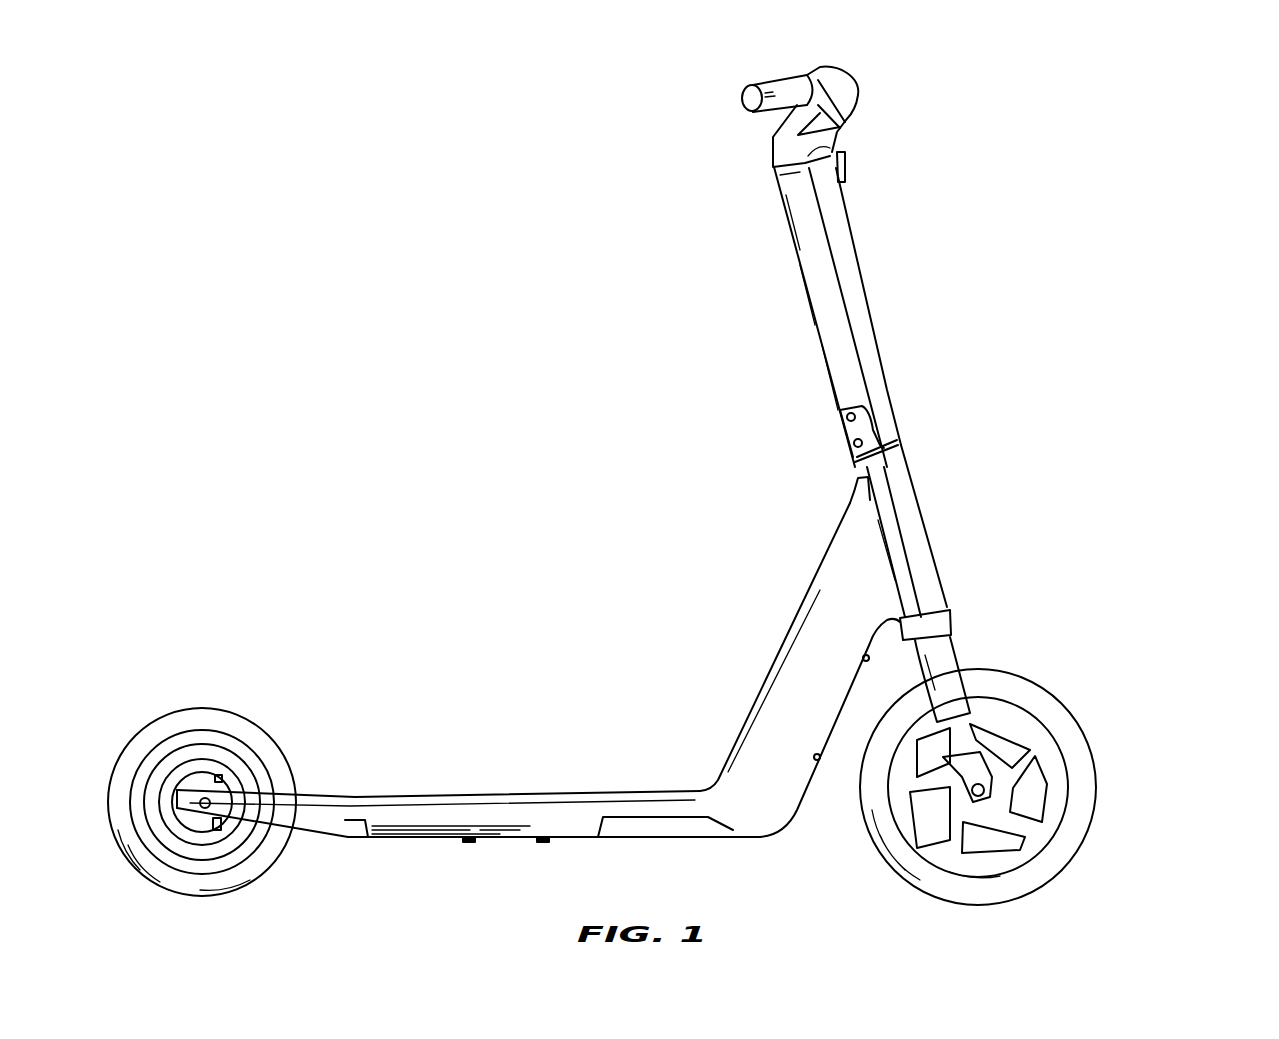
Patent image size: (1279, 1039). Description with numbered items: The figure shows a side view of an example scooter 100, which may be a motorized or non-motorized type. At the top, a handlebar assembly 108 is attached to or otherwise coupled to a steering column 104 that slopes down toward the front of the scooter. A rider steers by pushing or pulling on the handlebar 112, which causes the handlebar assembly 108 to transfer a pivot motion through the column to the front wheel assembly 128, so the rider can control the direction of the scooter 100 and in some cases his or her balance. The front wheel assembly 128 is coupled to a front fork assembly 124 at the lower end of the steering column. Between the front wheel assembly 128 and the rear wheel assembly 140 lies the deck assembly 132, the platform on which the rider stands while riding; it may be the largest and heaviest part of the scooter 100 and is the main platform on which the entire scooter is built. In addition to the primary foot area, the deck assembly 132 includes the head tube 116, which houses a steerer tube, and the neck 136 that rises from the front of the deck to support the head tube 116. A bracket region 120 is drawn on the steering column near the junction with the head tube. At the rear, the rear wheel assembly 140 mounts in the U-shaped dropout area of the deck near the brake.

The scooter 100 is at (1165, 114).
The steering column 104 is at (869, 322).
The handlebar assembly 108 is at (856, 82).
The handlebar 112 is at (746, 95).
The head tube 116 is at (921, 517).
The folding bracket 120 is at (900, 440).
The front fork assembly 124 is at (952, 645).
The front wheel assembly 128 is at (1045, 695).
The deck assembly 132 is at (537, 797).
The neck 136 is at (807, 630).
The rear wheel assembly 140 is at (232, 722).